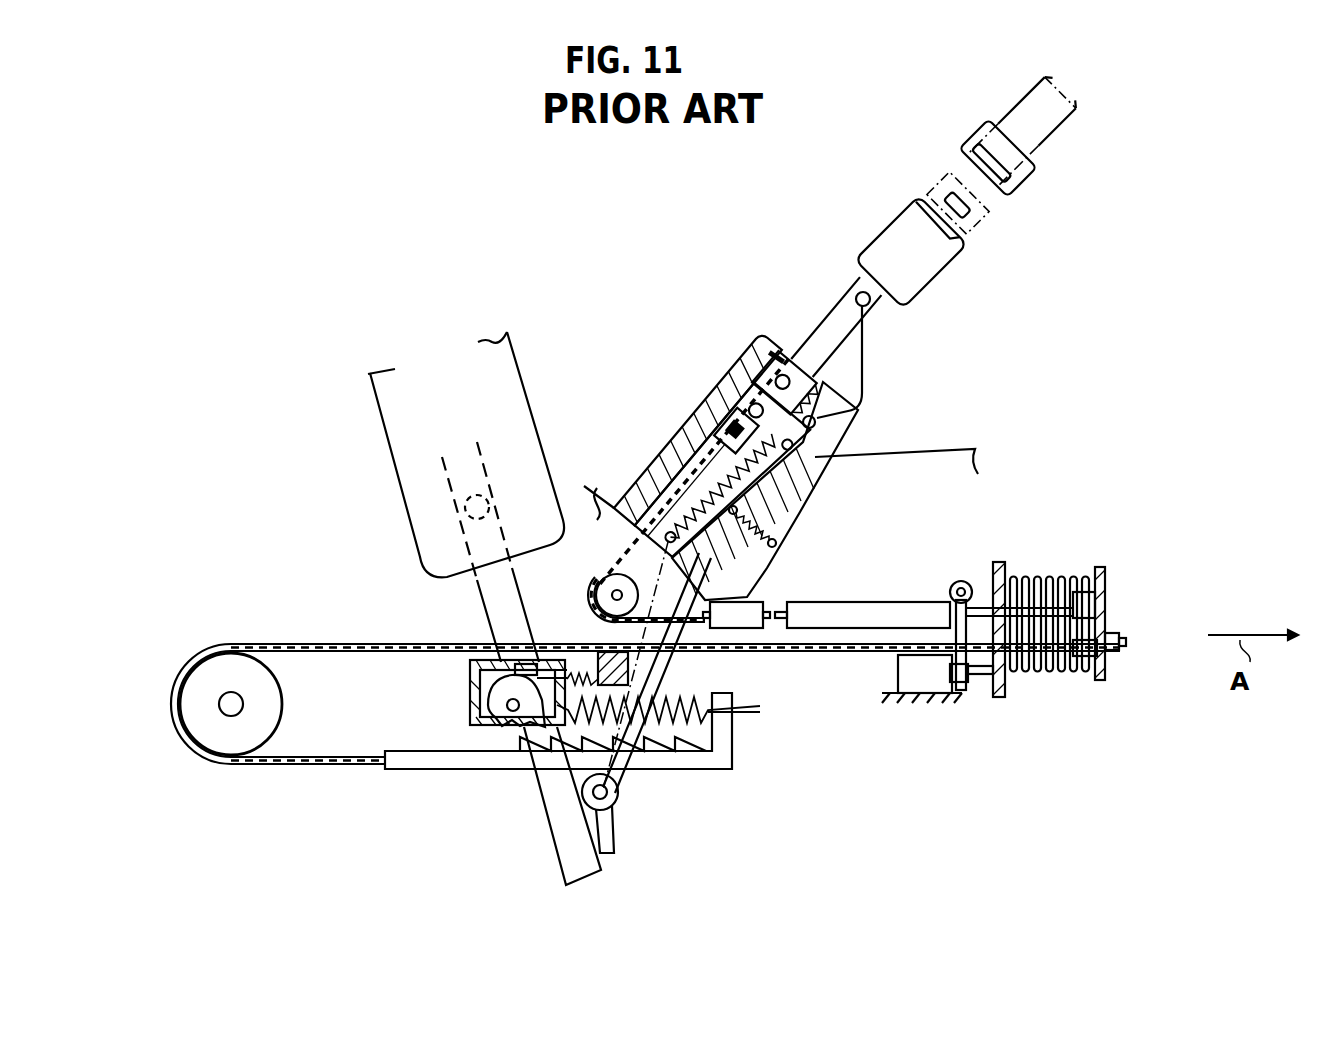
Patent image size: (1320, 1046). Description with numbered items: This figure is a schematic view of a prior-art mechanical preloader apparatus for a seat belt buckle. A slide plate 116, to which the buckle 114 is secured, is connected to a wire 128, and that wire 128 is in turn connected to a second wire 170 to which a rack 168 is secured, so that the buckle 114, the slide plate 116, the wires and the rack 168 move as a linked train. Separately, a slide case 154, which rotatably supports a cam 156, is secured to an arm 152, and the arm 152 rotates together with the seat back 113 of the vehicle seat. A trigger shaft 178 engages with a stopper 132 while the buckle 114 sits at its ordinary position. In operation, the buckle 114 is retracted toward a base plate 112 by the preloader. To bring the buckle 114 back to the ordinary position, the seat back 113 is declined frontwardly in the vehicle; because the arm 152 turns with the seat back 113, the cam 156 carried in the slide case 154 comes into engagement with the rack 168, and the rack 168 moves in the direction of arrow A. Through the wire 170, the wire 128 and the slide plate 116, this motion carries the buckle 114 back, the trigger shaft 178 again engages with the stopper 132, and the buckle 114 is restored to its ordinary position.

The base plate 112 is at (862, 428).
The seat back 113 is at (517, 352).
The buckle 114 is at (928, 280).
The slide plate 116 is at (832, 320).
The wire 128 is at (688, 474).
The stopper 132 is at (855, 602).
The arm 152 is at (556, 833).
The slide case 154 is at (465, 686).
The cam 156 is at (476, 704).
The rack 168 is at (413, 780).
The wire 170 is at (293, 764).
The trigger shaft 178 is at (957, 578).